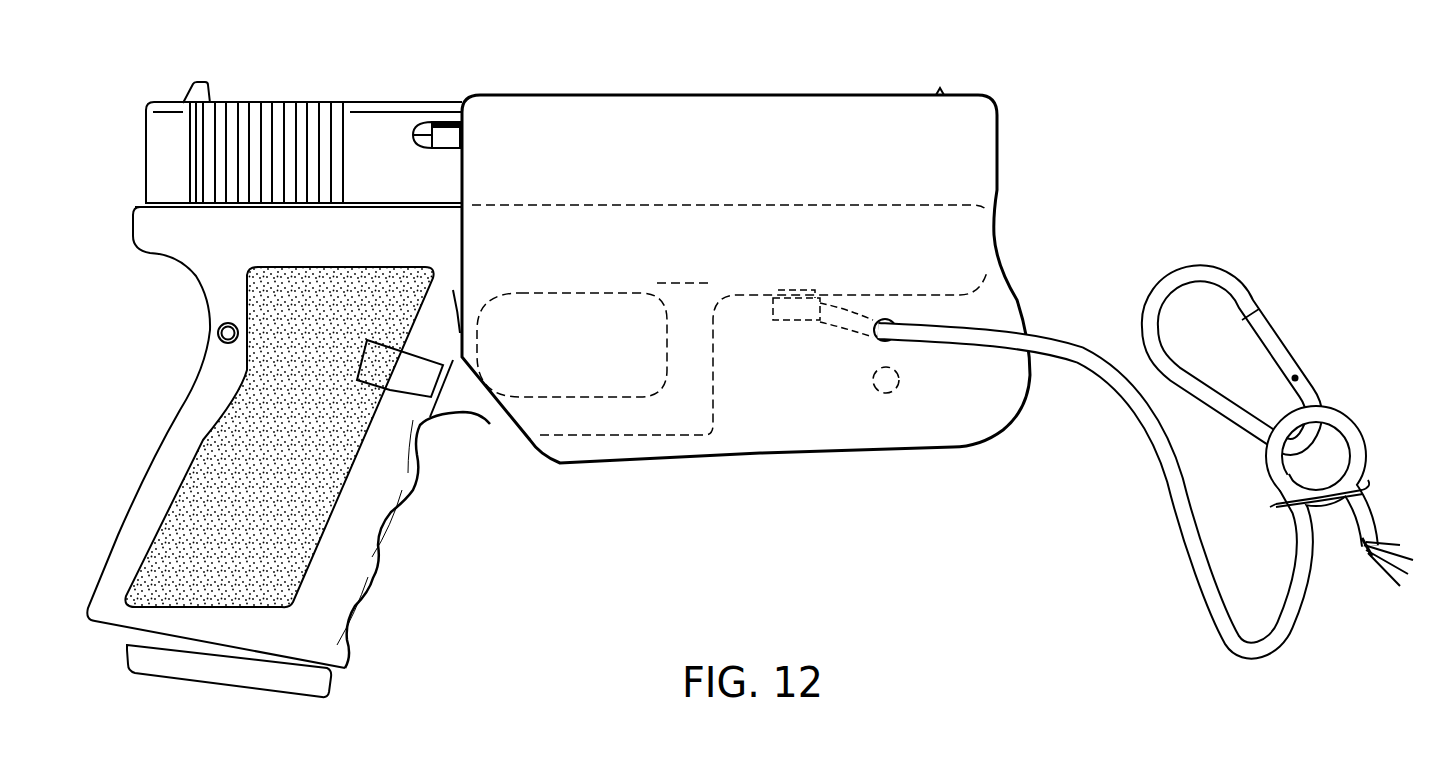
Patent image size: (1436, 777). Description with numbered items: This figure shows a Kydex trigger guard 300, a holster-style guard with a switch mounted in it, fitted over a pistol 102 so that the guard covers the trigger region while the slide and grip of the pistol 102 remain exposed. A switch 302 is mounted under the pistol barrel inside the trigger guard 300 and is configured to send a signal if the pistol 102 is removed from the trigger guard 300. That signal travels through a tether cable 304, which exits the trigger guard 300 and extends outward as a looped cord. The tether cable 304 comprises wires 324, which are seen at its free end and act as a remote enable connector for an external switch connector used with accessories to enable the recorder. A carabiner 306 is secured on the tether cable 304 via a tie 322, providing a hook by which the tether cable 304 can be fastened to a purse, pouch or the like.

The pistol 102 is at (420, 102).
The Kydex trigger guard 300 is at (1002, 152).
The switch 302 is at (790, 322).
The tether cable 304 is at (1172, 503).
The carabiner 306 is at (1200, 262).
The tie 322 is at (1365, 493).
The wires 324 is at (1383, 567).